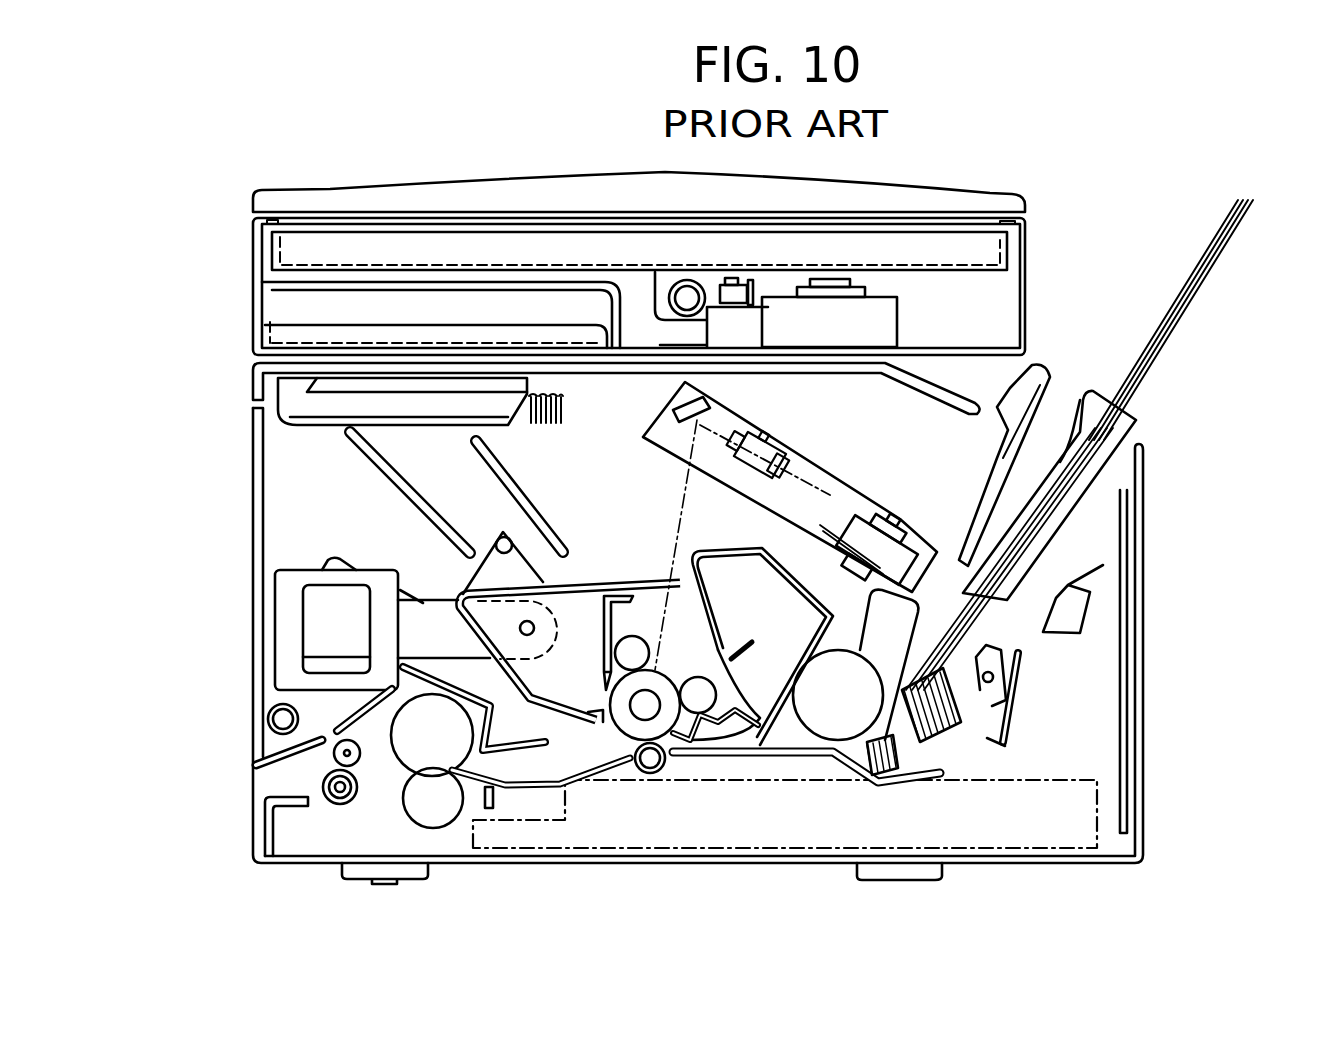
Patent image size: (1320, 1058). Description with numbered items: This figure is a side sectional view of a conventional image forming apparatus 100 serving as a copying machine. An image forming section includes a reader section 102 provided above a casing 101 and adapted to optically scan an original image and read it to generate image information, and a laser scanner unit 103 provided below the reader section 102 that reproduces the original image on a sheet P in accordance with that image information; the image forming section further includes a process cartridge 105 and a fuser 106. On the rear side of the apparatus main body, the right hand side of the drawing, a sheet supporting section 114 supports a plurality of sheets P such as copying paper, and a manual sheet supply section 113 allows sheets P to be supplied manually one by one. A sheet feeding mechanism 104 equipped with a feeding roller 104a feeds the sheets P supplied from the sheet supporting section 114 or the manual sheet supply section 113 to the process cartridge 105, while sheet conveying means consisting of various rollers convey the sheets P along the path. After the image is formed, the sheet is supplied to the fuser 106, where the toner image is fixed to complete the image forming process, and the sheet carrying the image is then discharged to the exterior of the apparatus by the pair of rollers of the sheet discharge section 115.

The image forming apparatus 100 is at (732, 919).
The casing 101 is at (1148, 703).
The reader section 102 is at (1008, 305).
The laser scanner unit 103 is at (845, 482).
The sheet feeding mechanism 104 is at (918, 665).
The feeding roller 104a is at (833, 728).
The process cartridge 105 is at (572, 718).
The fuser 106 is at (440, 815).
The manual sheet supply section 113 is at (1048, 370).
The sheet supporting section 114 is at (1137, 418).
The sheet discharge section 115 is at (318, 768).
The sheet P is at (1218, 267).